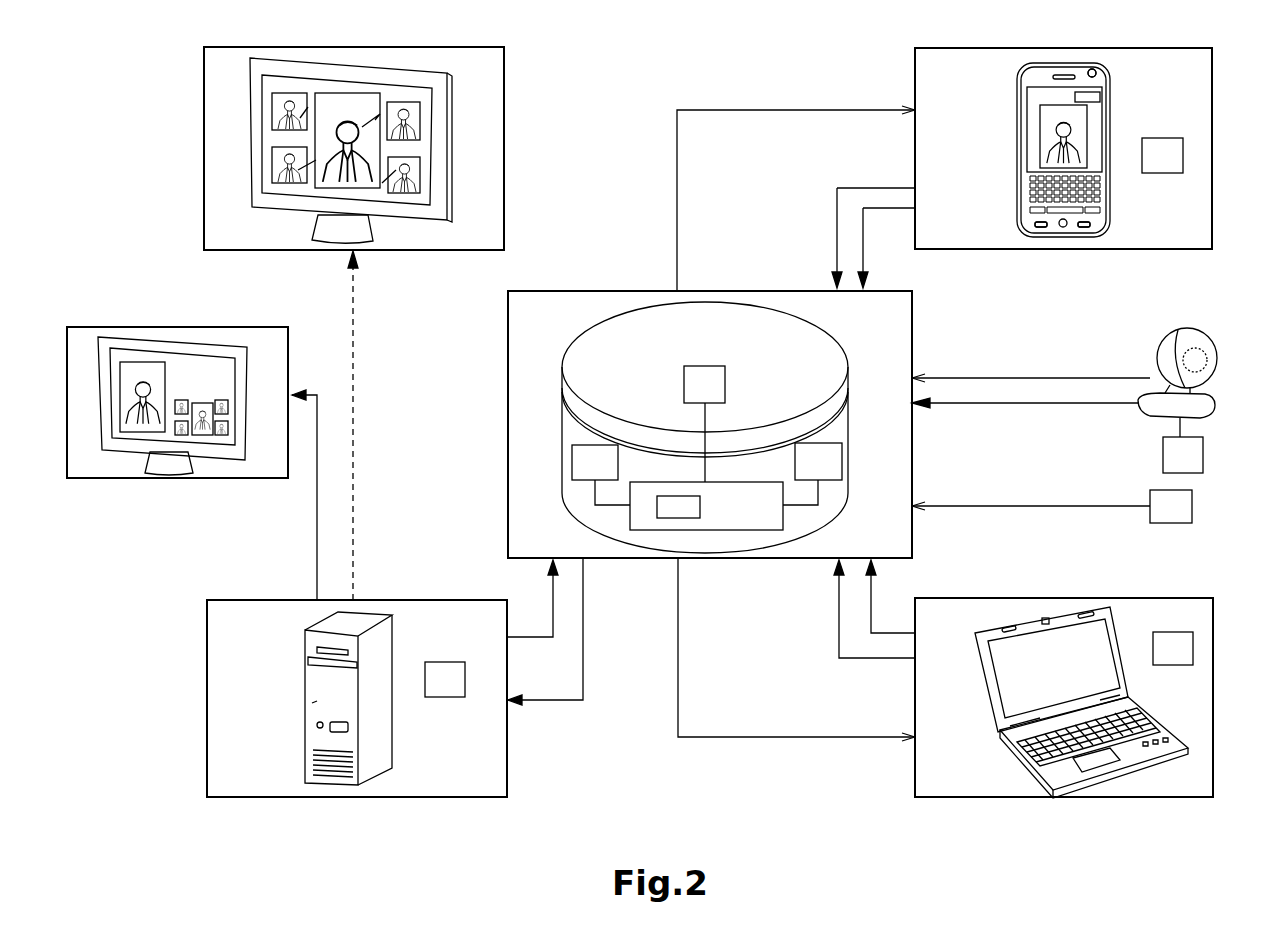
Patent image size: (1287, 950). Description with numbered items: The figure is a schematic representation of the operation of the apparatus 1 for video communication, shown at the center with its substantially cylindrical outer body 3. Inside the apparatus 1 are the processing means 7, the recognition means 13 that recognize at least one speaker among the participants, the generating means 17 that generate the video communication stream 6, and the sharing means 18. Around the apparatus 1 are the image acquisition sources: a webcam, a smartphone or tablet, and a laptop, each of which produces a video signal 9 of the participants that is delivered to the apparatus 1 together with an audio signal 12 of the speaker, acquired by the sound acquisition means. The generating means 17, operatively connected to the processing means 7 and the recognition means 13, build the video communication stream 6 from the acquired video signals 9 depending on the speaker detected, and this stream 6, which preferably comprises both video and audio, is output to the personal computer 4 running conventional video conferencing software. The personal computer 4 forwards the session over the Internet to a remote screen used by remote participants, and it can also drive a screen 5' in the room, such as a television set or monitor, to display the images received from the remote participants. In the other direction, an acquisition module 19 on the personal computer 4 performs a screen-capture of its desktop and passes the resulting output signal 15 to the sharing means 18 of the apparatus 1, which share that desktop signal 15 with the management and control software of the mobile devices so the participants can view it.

The apparatus for video communication 1 is at (613, 281).
The outer body 3 is at (565, 348).
The personal computer 4 is at (303, 685).
The screen 5' is at (177, 387).
The video communication stream 6 is at (355, 375).
The processing means 7 is at (730, 519).
The video signal 9 is at (837, 230).
The audio signal 12 is at (863, 235).
The recognition means 13 is at (822, 463).
The output signal 15 is at (710, 110).
The generating means 17 is at (590, 462).
The sharing means 18 is at (663, 508).
The acquisition module 19 is at (393, 680).